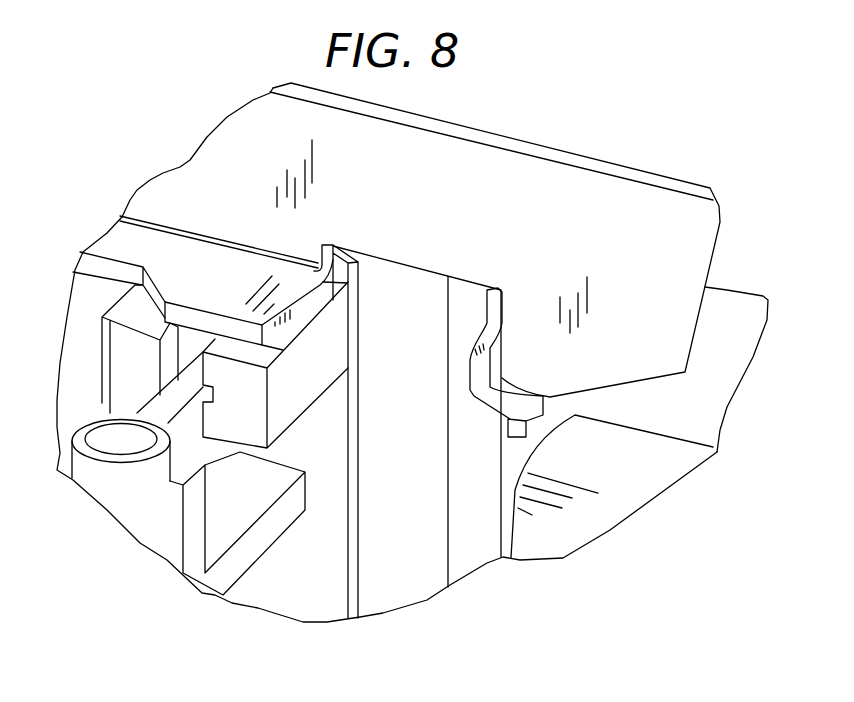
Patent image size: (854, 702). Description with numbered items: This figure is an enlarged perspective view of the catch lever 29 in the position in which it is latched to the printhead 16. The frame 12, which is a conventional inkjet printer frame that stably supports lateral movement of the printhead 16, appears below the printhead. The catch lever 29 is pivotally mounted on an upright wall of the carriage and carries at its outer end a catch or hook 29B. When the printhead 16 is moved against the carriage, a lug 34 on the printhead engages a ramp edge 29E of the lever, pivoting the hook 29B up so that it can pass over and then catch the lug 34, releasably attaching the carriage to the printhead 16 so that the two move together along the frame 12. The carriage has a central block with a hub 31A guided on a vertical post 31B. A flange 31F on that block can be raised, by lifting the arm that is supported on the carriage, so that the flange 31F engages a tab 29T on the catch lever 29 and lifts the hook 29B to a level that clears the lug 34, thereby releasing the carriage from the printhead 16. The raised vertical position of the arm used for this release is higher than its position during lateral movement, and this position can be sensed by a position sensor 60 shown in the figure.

The frame 12 is at (467, 503).
The printhead 16 is at (568, 507).
The catch lever 29 is at (498, 231).
The tab 29T is at (222, 263).
The hook 29B is at (608, 315).
The ramp edge 29E is at (650, 383).
The hub 31A is at (133, 502).
The vertical post 31B is at (98, 443).
The flange 31F is at (193, 428).
The lug 34 is at (473, 370).
The position sensor 60 is at (323, 353).